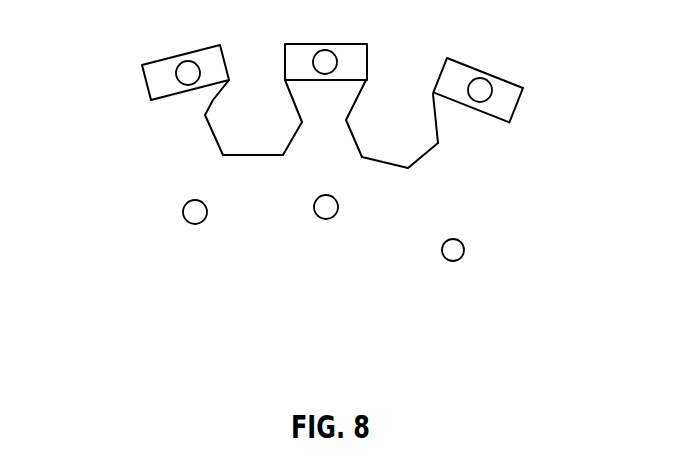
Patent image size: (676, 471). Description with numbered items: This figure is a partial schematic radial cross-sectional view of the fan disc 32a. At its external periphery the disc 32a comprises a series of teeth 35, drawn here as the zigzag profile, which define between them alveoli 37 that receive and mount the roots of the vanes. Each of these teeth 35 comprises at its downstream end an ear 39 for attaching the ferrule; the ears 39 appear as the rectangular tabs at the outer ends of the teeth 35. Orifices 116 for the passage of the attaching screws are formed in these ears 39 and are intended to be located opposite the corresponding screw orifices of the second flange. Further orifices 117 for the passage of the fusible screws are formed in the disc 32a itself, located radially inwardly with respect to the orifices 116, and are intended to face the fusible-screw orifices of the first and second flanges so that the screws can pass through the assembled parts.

The disc 32a is at (196, 150).
The teeth 35 is at (433, 94).
The alveoli 37 is at (408, 168).
The ear 39 is at (470, 63).
The orifices 116 is at (483, 90).
The orifices 117 is at (455, 250).